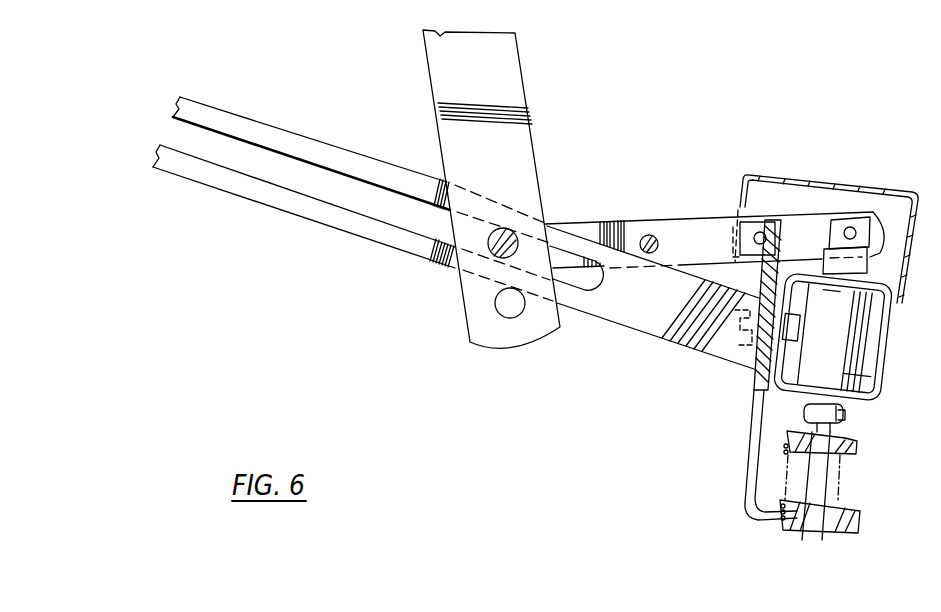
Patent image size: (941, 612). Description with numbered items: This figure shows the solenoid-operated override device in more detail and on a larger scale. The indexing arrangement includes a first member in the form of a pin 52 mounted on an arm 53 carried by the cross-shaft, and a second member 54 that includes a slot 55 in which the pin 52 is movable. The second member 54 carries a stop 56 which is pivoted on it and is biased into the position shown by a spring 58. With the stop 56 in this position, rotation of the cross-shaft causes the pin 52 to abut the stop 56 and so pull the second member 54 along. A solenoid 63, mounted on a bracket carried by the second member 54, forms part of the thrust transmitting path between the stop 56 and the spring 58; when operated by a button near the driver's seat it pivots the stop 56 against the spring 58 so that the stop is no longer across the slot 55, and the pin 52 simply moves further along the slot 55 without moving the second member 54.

The pin 52 is at (506, 230).
The arm 53 is at (512, 89).
The second member 54 is at (300, 207).
The slot 55 is at (339, 152).
The stop 56 is at (680, 218).
The spring 58 is at (840, 493).
The solenoid 63 is at (852, 370).